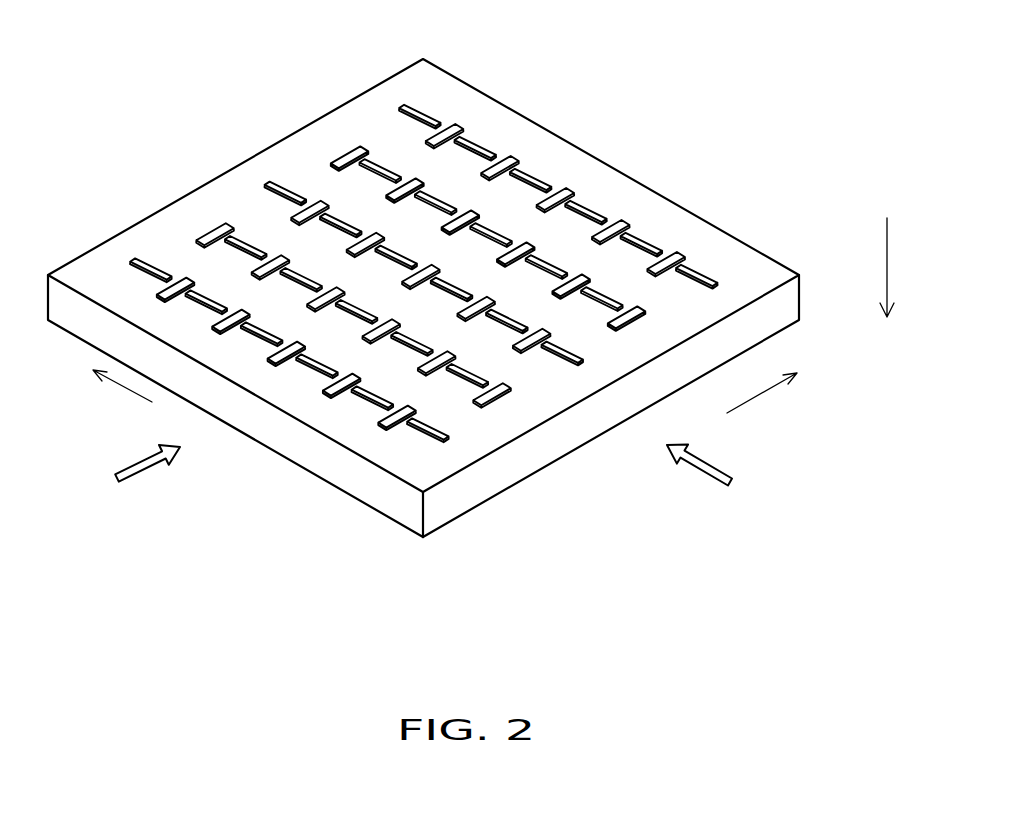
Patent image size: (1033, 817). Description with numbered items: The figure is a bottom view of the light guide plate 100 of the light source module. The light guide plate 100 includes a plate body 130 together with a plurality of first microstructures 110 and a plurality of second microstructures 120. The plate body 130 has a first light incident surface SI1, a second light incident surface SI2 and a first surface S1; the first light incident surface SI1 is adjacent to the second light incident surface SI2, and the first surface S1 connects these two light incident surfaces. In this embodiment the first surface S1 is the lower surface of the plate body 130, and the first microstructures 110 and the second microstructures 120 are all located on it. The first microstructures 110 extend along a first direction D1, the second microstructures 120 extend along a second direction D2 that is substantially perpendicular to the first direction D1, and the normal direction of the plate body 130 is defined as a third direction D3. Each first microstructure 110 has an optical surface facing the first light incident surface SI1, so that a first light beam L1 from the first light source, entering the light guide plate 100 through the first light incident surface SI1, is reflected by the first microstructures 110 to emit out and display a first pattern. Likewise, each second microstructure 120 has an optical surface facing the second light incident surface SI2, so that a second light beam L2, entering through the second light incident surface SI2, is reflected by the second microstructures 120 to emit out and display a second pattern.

The light guide plate 100 is at (463, 317).
The first microstructures 110 is at (388, 425).
The second microstructures 120 is at (399, 108).
The plate body 130 is at (463, 307).
The first surface S1 is at (408, 76).
The first light incident surface SI1 is at (549, 460).
The second light incident surface SI2 is at (384, 506).
The first direction D1 is at (762, 387).
The second direction D2 is at (122, 395).
The third direction D3 is at (901, 267).
The first light beam L1 is at (731, 483).
The second light beam L2 is at (148, 474).